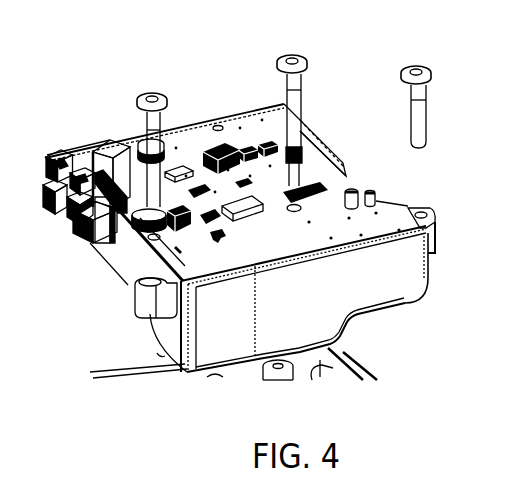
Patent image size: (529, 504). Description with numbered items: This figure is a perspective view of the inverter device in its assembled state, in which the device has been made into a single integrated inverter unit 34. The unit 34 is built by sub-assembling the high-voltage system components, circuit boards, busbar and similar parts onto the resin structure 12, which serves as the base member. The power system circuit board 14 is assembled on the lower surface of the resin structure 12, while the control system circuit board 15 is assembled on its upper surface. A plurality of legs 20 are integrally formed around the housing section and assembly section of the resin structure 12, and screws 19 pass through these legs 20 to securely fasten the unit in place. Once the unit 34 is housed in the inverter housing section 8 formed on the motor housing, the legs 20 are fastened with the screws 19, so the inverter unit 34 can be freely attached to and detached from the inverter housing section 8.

The inverter housing section 8 is at (350, 361).
The resin structure 12 is at (376, 292).
The power system circuit board 14 is at (107, 255).
The control system circuit board 15 is at (325, 210).
The screws 19 is at (427, 118).
The legs 20 is at (133, 300).
The inverter unit 34 is at (212, 110).